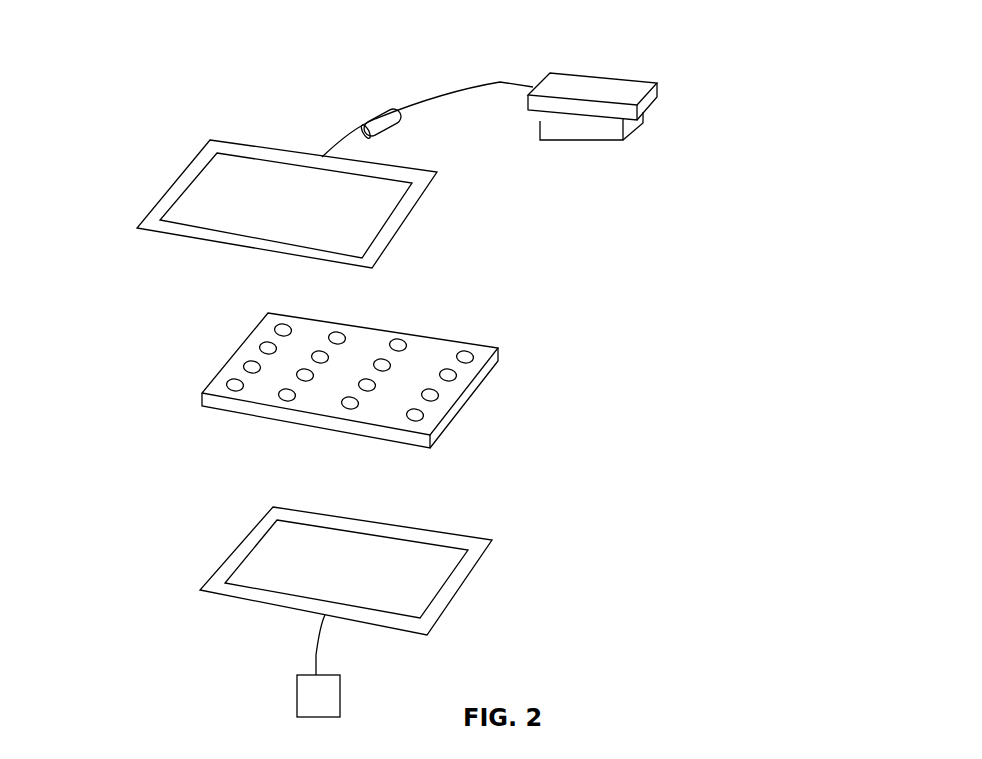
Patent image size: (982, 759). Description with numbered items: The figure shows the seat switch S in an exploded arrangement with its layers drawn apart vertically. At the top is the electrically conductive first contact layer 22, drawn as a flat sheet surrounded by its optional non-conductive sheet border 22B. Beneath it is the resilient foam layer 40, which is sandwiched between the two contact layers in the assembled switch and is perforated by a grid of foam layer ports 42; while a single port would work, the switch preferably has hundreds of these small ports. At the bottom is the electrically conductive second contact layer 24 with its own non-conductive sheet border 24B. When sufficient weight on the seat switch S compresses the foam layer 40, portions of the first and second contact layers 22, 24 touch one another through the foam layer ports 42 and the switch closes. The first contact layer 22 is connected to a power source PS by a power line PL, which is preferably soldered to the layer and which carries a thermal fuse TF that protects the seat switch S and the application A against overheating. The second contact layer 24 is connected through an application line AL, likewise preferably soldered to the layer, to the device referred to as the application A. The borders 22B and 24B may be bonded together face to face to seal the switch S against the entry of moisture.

The seat switch S is at (157, 114).
The first contact layer 22 is at (316, 201).
The non-conductive sheet border 22B is at (177, 192).
The power line PL is at (347, 136).
The thermal fuse TF is at (397, 110).
The power source PS is at (592, 106).
The foam layer 40 is at (532, 366).
The foam layer ports 42 is at (285, 325).
The second contact layer 24 is at (375, 571).
The non-conductive sheet border 24B is at (227, 571).
The application line AL is at (317, 650).
The application A is at (318, 696).